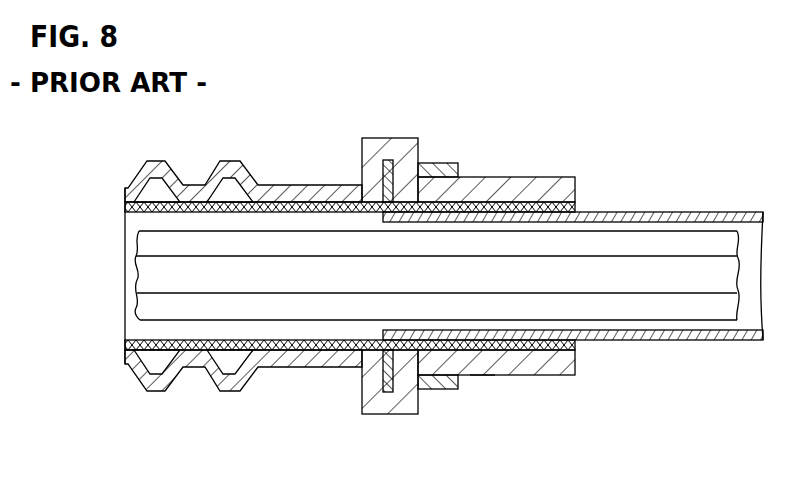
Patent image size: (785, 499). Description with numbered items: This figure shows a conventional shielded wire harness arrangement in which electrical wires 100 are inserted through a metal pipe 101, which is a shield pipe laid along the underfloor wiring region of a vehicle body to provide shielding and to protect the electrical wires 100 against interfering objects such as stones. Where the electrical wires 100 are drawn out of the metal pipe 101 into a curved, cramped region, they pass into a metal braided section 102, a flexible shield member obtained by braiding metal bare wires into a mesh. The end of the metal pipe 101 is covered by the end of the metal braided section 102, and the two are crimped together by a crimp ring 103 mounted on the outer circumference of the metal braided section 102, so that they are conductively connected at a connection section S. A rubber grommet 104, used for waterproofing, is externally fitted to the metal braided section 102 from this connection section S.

The electrical wires 100 is at (652, 242).
The metal pipe 101 is at (692, 211).
The metal braided section 102 is at (236, 198).
The crimp ring 103 is at (524, 198).
The rubber grommet 104 is at (395, 138).
The connection section S is at (482, 364).